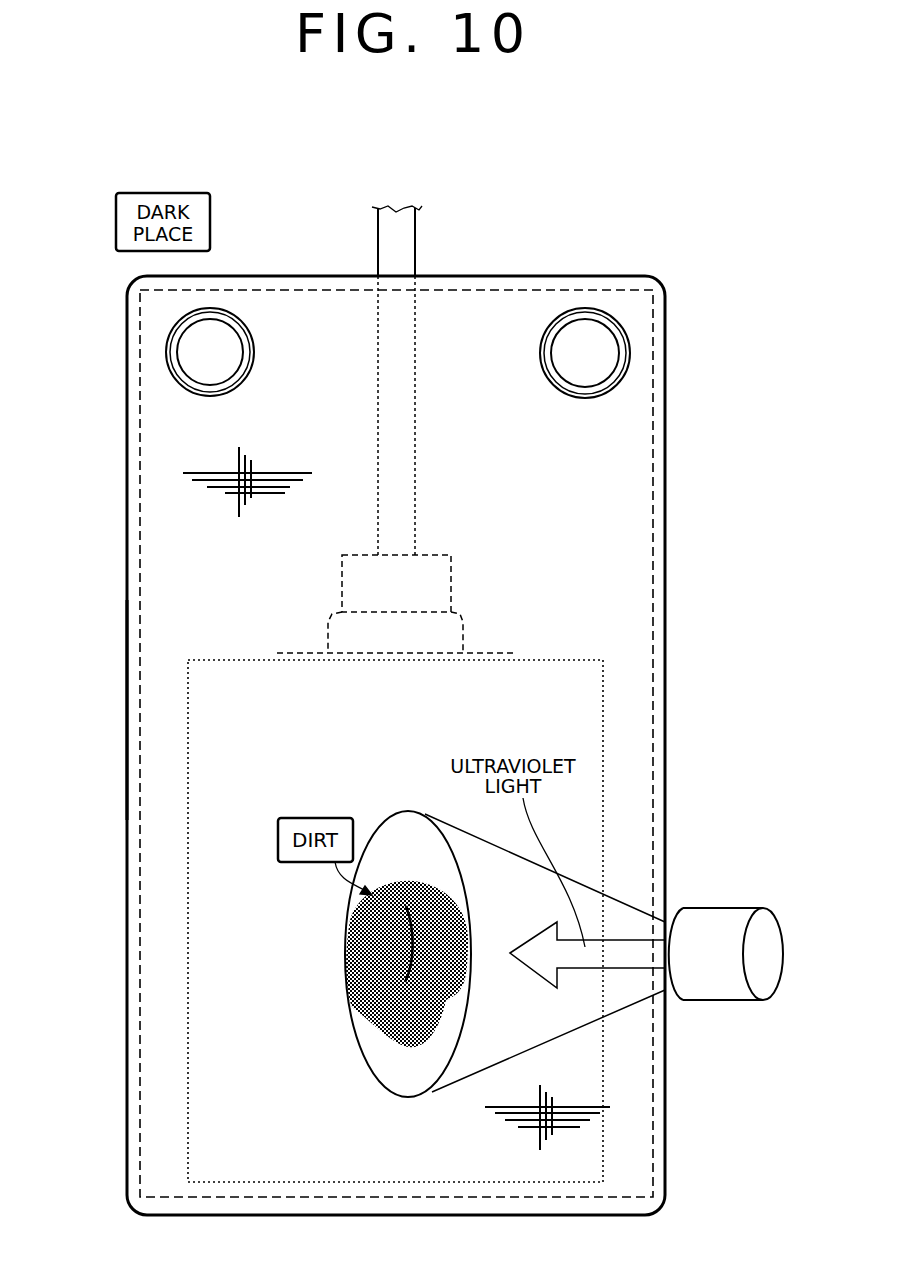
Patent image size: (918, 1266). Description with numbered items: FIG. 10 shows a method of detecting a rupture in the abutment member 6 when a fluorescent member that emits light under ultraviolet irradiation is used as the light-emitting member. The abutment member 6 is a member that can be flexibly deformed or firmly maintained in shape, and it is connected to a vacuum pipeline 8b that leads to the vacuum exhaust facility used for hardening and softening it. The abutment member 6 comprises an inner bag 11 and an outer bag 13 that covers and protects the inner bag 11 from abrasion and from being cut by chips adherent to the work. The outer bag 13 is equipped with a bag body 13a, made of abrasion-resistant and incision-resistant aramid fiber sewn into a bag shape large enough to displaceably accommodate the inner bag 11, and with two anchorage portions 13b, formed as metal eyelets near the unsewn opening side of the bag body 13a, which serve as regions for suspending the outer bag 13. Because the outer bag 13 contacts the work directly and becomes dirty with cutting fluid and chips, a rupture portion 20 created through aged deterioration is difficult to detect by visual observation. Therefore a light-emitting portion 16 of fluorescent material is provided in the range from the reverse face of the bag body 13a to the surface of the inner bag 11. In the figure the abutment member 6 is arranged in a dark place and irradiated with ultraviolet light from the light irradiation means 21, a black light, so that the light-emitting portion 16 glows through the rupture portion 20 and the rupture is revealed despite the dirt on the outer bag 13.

The abutment member 6 is at (636, 256).
The vacuum pipeline 8b is at (378, 258).
The inner bag 11 is at (229, 654).
The outer bag 13 is at (106, 326).
The bag body 13a is at (127, 707).
The anchorage portion 13b is at (222, 380).
The light-emitting portion 16 is at (415, 945).
The rupture portion 20 is at (396, 947).
The light irradiation means 21 is at (718, 905).